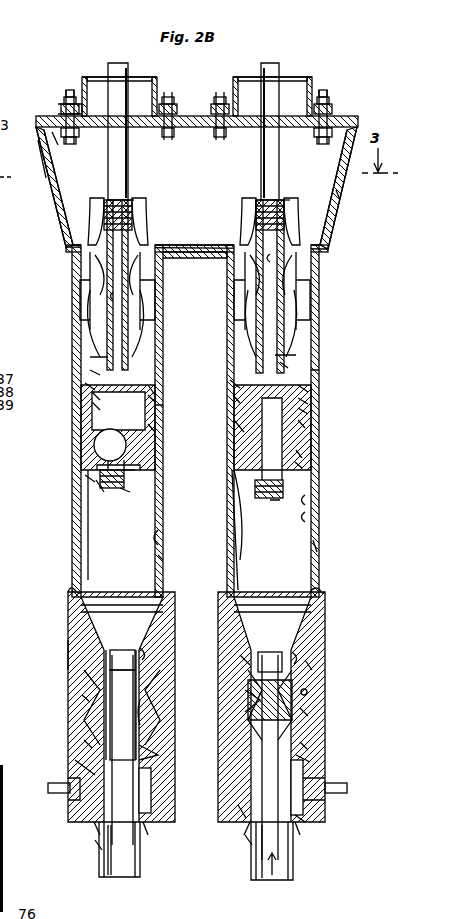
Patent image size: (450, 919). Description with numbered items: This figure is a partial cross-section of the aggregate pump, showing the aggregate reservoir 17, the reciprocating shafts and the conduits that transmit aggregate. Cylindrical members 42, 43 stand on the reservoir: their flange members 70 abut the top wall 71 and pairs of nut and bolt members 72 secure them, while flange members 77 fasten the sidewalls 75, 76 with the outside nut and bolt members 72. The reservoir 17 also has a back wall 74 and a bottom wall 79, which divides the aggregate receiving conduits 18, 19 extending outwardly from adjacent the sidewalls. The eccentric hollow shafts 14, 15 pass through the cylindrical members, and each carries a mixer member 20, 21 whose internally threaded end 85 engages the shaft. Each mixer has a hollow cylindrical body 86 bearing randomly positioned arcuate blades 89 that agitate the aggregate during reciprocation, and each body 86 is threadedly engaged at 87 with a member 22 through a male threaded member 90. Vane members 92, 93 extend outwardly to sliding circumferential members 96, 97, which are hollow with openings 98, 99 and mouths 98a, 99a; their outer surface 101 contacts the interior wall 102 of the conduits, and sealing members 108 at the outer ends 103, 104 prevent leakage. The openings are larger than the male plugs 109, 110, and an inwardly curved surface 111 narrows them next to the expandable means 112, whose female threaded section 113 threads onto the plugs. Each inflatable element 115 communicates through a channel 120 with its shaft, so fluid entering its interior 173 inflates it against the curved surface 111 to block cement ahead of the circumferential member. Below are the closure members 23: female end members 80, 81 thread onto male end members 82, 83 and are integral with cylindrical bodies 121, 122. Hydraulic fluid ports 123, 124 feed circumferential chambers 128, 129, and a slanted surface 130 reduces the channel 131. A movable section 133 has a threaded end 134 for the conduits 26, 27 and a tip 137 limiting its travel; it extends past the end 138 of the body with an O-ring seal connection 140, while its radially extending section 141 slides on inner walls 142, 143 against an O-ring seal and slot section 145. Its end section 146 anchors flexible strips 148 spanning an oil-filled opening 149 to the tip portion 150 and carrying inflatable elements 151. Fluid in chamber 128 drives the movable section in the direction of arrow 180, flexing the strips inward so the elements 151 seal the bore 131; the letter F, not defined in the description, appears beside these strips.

The hollow shaft 14 is at (279, 154).
The hollow shaft 15 is at (125, 152).
The aggregate reservoir 17 is at (349, 211).
The aggregate receiving conduit 18 is at (319, 312).
The aggregate receiving conduit 19 is at (164, 318).
The mixer blade member 20 is at (284, 203).
The mixer blade member 21 is at (128, 203).
The member 22 is at (168, 413).
The closure member section gate 23 is at (333, 617).
The conduit 26 is at (296, 865).
The conduit 27 is at (100, 865).
The cylindrical member 42 is at (312, 82).
The cylindrical member 43 is at (155, 88).
The flange member 70 is at (178, 112).
The top wall 71 is at (198, 116).
The nut and bolt member 72 is at (68, 96).
The back wall 74 is at (202, 166).
The sidewall 75 is at (343, 196).
The sidewall 76 is at (44, 178).
The flange member 77 is at (60, 140).
The bottom wall 79 is at (184, 255).
The female end member 80 is at (320, 600).
The female end member 81 is at (68, 598).
The male end member 82 is at (319, 548).
The male end member 83 is at (164, 560).
The end 85 is at (108, 205).
The cylindrical body section 86 is at (150, 236).
The threaded engagement 87 is at (95, 372).
The arcuate blades 89 is at (240, 284).
The male threaded member 90 is at (105, 356).
The vane member 92 is at (236, 400).
The vane member 93 is at (95, 396).
The sliding circumferential member 96 is at (305, 388).
The sliding circumferential member 97 is at (156, 390).
The opening 98 is at (240, 430).
The mouth 98a is at (236, 500).
The opening 99 is at (95, 406).
The mouth 99a is at (90, 480).
The outer surface 101 is at (158, 455).
The interior wall 102 is at (163, 535).
The outer end 103 is at (235, 388).
The outer end 104 is at (85, 445).
The sealing member 108 is at (90, 386).
The male plug 109 is at (305, 410).
The male plug 110 is at (158, 398).
The inwardly curved surface 111 is at (158, 428).
The expandable means 112 is at (96, 499).
The female threaded section 113 is at (305, 400).
The inflatable element 115 is at (135, 470).
The channel 120 is at (122, 296).
The cylindrical body 121 is at (128, 490).
The cylindrical body 122 is at (130, 472).
The hydraulic fluid port 123 is at (340, 790).
The hydraulic fluid port 124 is at (60, 778).
The circumferential chamber 128 is at (310, 770).
The circumferential chamber 129 is at (165, 775).
The slanted surface 130 is at (138, 618).
The channel 131 is at (128, 658).
The movable section 133 is at (310, 758).
The threaded end 134 is at (95, 828).
The outwardly extending tip 137 is at (98, 845).
The end 138 is at (305, 820).
The O-ring seal connection 140 is at (240, 812).
The outwardly radially extending section 141 is at (160, 750).
The inner wall 142 is at (310, 692).
The inner wall 143 is at (158, 705).
The O-ring seal and slot section 145 is at (310, 745).
The end section 146 is at (310, 712).
The flexible strip 148 is at (310, 680).
The opening 149 is at (242, 688).
The tip portion 150 is at (148, 650).
The inflatable element 151 is at (240, 660).
The interior 173 is at (130, 440).
The arrow 180 is at (265, 864).
The flow F is at (240, 700).